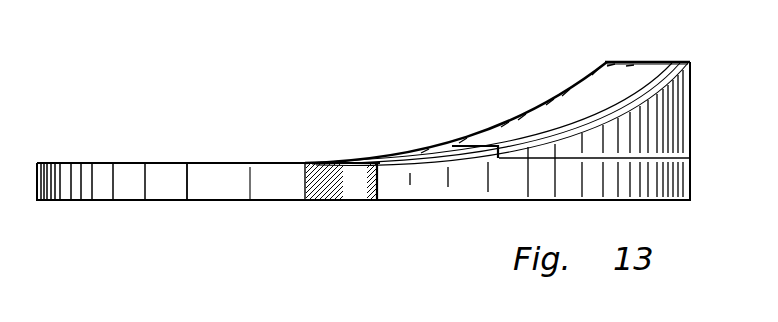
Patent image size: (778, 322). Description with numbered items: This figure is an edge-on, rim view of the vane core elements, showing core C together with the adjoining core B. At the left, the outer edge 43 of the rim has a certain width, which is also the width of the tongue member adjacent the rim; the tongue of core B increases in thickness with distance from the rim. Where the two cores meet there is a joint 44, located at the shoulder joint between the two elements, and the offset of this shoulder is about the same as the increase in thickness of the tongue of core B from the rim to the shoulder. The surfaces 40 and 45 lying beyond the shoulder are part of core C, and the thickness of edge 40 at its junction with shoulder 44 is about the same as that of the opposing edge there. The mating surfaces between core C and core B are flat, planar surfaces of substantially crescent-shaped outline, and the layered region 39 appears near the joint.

The laminate layers 39 is at (427, 146).
The edge 40 is at (627, 60).
The outer edge 43 is at (198, 185).
The joint 44 is at (452, 142).
The surface 45 is at (560, 92).
The core C is at (661, 62).